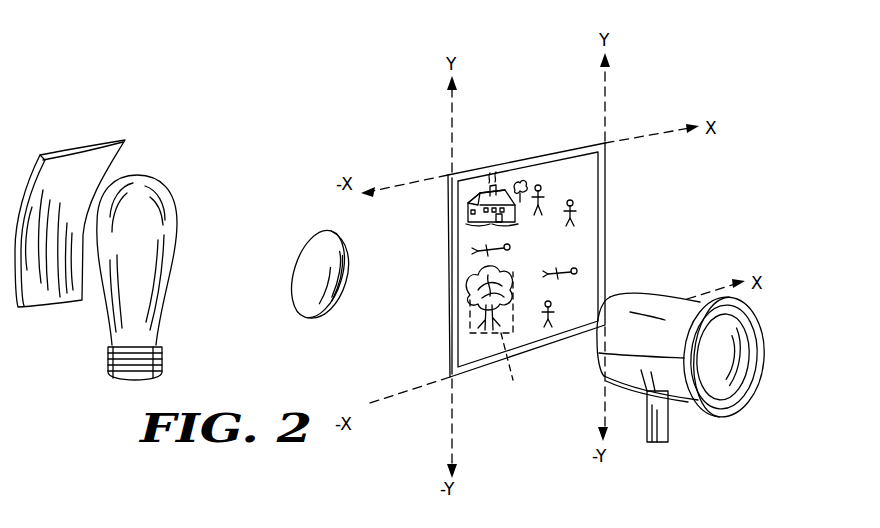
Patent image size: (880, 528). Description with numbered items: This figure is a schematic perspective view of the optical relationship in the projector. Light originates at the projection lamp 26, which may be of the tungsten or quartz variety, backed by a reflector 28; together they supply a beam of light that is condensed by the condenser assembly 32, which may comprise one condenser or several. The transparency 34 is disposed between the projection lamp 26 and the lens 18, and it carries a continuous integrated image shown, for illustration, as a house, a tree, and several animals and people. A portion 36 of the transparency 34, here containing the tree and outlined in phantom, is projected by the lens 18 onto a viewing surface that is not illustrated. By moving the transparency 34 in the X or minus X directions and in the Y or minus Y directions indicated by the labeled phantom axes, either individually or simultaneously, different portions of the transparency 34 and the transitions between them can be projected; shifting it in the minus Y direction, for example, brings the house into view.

The lens 18 is at (757, 320).
The projection lamp 26 is at (153, 178).
The reflector 28 is at (67, 152).
The condenser assembly 32 is at (320, 232).
The transparency 34 is at (447, 214).
The portion 36 is at (495, 335).